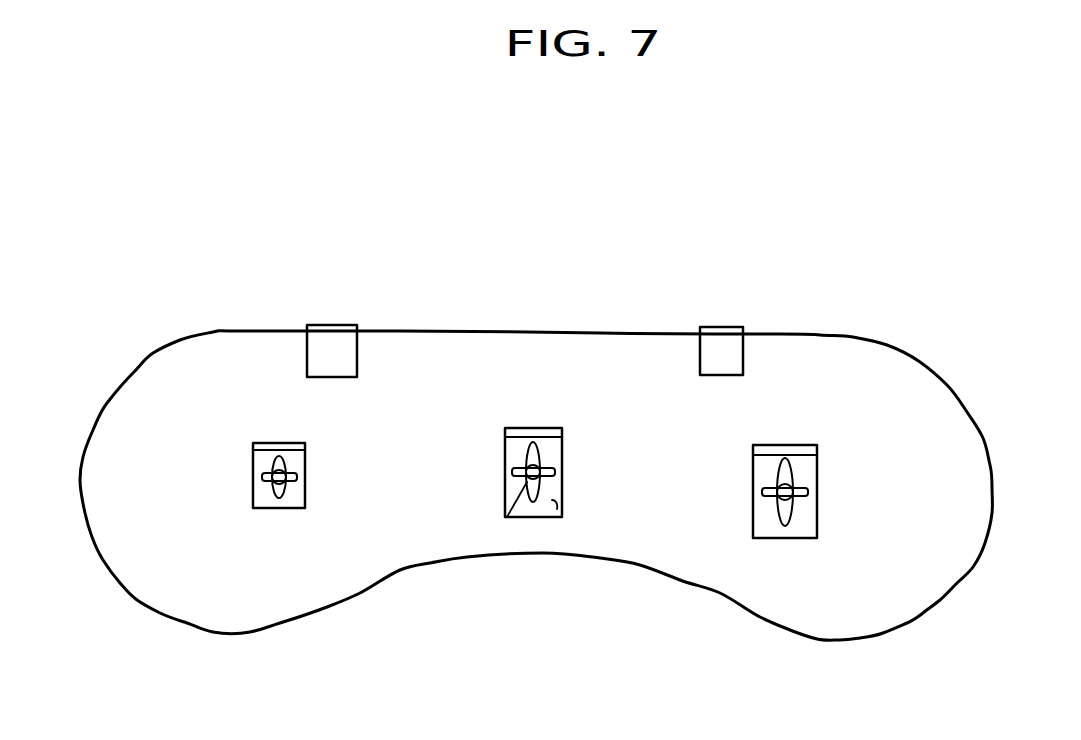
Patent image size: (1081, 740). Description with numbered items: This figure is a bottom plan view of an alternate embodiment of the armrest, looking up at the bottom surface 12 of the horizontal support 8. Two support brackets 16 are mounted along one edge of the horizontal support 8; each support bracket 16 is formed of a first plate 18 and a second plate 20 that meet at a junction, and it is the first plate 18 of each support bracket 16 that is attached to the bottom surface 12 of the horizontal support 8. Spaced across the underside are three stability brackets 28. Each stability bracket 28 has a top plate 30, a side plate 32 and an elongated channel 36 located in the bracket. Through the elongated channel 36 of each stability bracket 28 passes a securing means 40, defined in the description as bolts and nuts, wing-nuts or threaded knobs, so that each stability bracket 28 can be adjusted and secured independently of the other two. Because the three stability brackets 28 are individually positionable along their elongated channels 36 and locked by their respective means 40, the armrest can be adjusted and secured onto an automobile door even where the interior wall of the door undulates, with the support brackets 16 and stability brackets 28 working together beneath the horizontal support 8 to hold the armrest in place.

The horizontal support 8 is at (412, 503).
The bottom surface 12 is at (632, 512).
The support bracket 16 is at (332, 352).
The first plate 18 is at (335, 362).
The second plate 20 is at (322, 325).
The stability bracket 28 is at (257, 462).
The top plate 30 is at (260, 497).
The side plate 32 is at (280, 443).
The elongated channel 36 is at (280, 512).
The means 40 is at (300, 513).